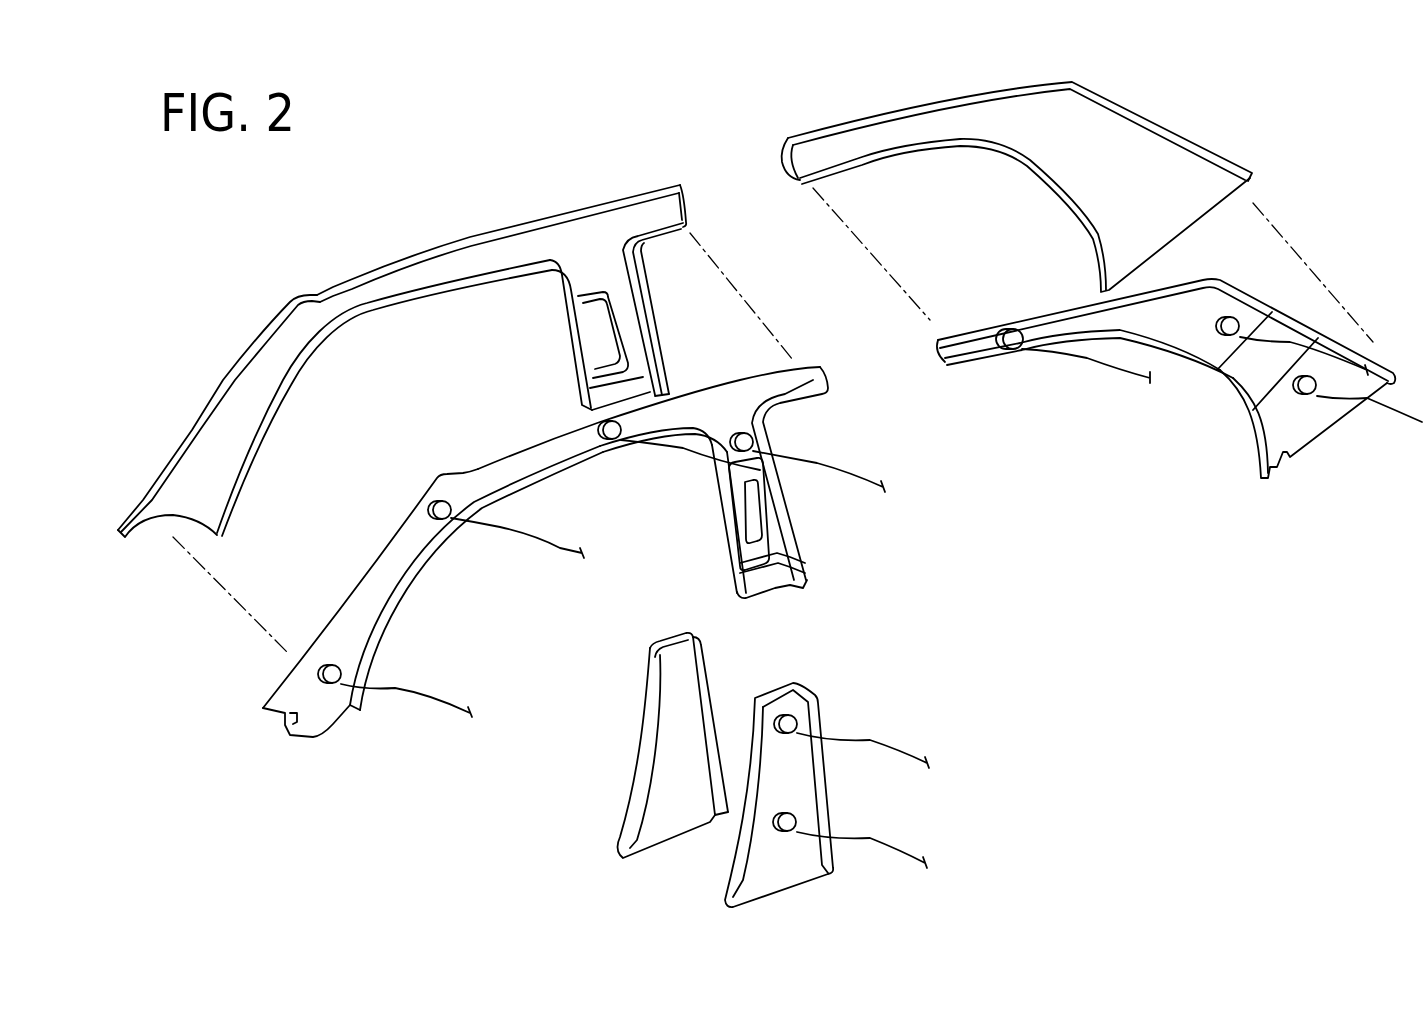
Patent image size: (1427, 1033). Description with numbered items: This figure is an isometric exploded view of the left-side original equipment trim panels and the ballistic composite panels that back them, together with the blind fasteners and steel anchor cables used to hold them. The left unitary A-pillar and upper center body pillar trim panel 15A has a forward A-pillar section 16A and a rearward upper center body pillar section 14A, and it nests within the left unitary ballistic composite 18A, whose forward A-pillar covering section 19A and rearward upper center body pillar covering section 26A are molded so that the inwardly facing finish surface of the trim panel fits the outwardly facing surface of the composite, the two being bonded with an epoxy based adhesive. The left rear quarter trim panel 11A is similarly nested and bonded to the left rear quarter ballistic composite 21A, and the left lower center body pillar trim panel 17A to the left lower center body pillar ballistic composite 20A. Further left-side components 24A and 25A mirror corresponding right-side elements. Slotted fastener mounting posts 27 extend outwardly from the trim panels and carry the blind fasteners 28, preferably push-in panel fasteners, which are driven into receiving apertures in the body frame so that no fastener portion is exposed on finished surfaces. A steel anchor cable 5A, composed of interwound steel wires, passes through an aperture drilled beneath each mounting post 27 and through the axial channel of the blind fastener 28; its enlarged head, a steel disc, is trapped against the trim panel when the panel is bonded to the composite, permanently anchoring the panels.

The rear roof side rail garnish 5A is at (1095, 365).
The left OEM rear quarter trim panel 11A is at (1213, 352).
The center pillar upper garnish 14A is at (797, 548).
The left OEM unitary A-pillar and upper center body pillar trim panel 15A is at (577, 447).
The forward A-pillar section 16A is at (407, 543).
The left OEM lower center body pillar trim panel 17A is at (787, 787).
The left unitary A-pillar and upper center body pillar ballistic composite 18A is at (444, 248).
The forward A-pillar covering section 19A is at (280, 357).
The left lower center body pillar ballistic composite 20A is at (678, 738).
The left rear quarter ballistic composite 21A is at (1108, 162).
The left-side mirror component 24A is at (748, 517).
The left-side mirror component 25A is at (600, 343).
The rearward upper center body pillar covering section 26A is at (648, 297).
The slotted fastener mounting post 27 is at (997, 350).
The blind fastener 28 is at (1015, 353).